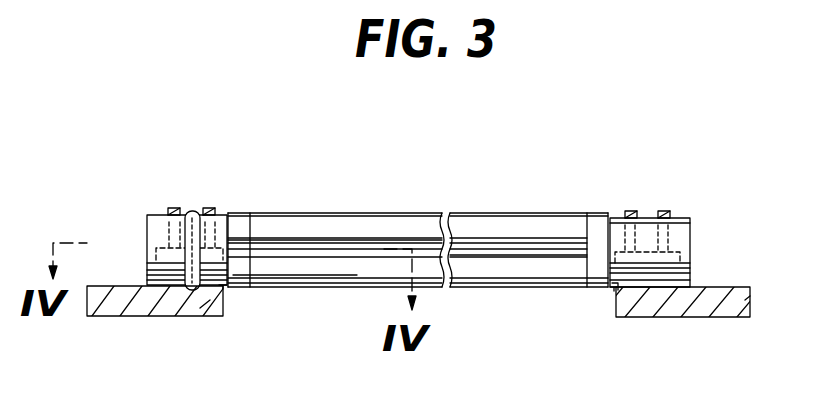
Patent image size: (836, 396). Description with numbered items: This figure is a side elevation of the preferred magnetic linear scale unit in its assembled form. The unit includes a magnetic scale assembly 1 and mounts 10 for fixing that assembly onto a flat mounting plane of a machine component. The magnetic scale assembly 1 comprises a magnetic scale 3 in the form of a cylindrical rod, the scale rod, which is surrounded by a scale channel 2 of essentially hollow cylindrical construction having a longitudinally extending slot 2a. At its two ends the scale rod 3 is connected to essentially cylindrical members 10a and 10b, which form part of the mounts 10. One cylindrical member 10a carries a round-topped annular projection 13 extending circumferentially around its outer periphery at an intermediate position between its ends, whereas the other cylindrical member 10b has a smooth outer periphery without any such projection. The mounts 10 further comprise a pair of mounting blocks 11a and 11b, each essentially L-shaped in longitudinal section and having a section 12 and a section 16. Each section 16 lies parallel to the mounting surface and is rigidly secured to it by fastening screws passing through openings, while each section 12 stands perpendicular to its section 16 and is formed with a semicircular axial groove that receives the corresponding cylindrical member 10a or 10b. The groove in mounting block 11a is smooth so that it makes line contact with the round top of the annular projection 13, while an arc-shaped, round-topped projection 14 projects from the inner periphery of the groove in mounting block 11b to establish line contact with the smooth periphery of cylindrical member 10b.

The magnetic scale assembly 1 is at (418, 210).
The scale channel 2 is at (405, 227).
The longitudinally extending slot 2a is at (562, 250).
The magnetic scale 3 is at (347, 248).
The mounts 10 is at (420, 210).
The cylindrical member 10a is at (153, 225).
The cylindrical member 10b is at (680, 237).
The mounting block 11a is at (153, 310).
The mounting block 11b is at (657, 303).
The section 12 is at (222, 285).
The annular projection 13 is at (192, 214).
The arc-shaped projection 14 is at (633, 292).
The section 16 is at (205, 308).